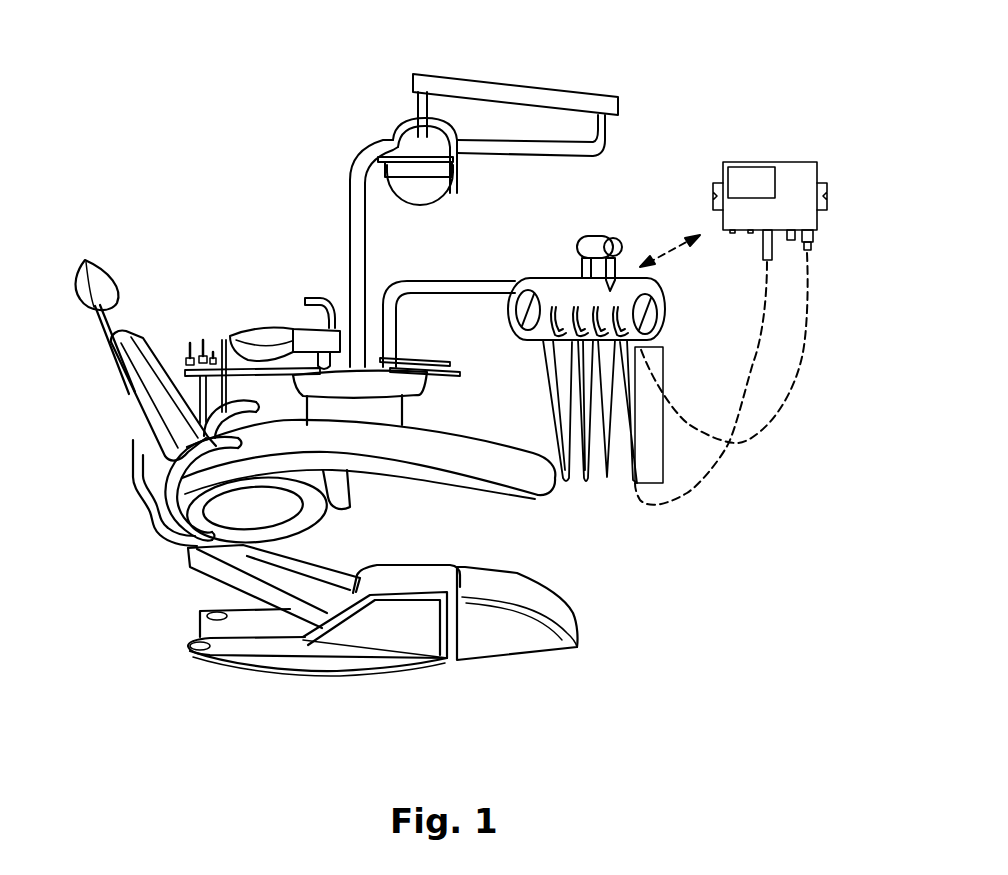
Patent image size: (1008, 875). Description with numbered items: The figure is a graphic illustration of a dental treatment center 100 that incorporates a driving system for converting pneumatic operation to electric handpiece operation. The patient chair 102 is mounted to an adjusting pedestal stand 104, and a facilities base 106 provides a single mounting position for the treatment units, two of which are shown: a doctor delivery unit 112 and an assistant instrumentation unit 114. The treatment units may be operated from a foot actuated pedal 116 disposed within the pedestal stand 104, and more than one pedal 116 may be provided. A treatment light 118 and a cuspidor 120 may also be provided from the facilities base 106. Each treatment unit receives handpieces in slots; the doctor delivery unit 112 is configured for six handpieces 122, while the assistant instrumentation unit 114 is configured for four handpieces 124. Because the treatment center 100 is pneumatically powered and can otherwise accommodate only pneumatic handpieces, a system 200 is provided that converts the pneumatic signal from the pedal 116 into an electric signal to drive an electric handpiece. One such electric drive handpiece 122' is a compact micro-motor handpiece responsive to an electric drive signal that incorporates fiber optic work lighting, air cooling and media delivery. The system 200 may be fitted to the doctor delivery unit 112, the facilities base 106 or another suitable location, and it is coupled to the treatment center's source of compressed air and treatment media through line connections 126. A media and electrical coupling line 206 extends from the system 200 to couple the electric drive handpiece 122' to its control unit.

The dental treatment center 100 is at (686, 105).
The patient chair 102 is at (130, 408).
The adjusting pedestal stand 104 is at (408, 645).
The facilities base 106 is at (393, 408).
The doctor delivery unit 112 is at (548, 287).
The assistant instrumentation unit 114 is at (190, 350).
The foot actuated pedal 116 is at (193, 657).
The treatment light 118 is at (392, 138).
The cuspidor 120 is at (270, 340).
The handpieces 122 is at (557, 395).
The electric drive handpiece 122' is at (656, 283).
The handpieces 124 is at (203, 340).
The line connections 126 is at (805, 315).
The system 200 is at (792, 160).
The media and electrical coupling line 206 is at (758, 360).